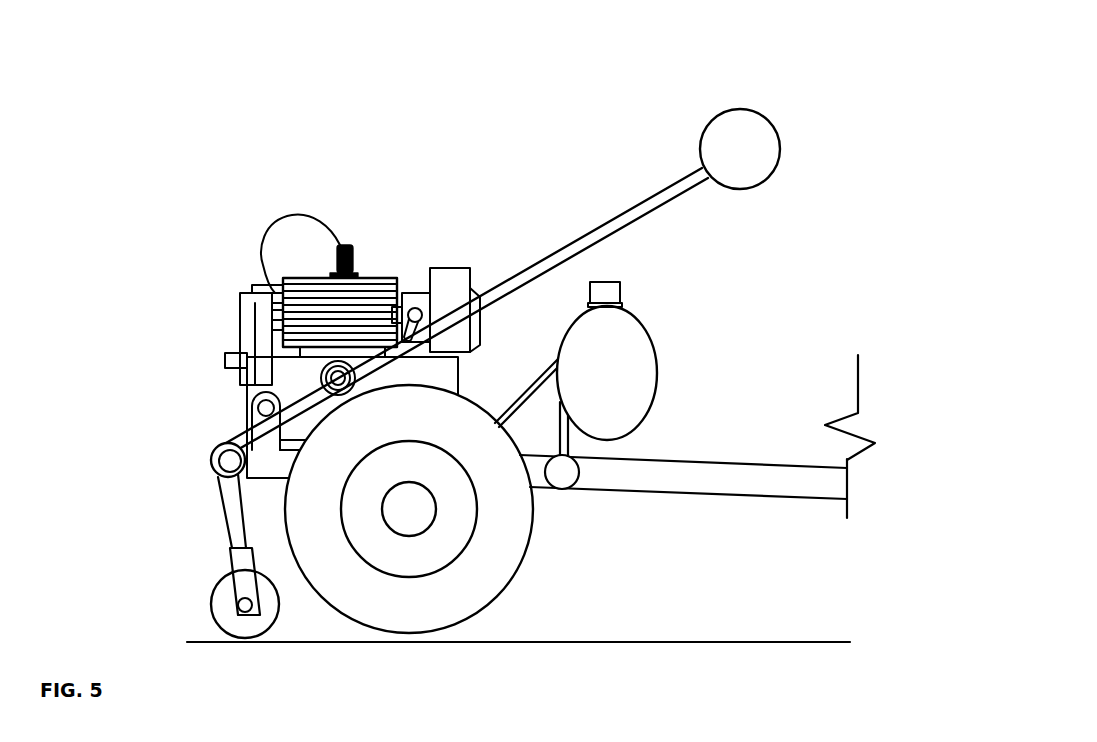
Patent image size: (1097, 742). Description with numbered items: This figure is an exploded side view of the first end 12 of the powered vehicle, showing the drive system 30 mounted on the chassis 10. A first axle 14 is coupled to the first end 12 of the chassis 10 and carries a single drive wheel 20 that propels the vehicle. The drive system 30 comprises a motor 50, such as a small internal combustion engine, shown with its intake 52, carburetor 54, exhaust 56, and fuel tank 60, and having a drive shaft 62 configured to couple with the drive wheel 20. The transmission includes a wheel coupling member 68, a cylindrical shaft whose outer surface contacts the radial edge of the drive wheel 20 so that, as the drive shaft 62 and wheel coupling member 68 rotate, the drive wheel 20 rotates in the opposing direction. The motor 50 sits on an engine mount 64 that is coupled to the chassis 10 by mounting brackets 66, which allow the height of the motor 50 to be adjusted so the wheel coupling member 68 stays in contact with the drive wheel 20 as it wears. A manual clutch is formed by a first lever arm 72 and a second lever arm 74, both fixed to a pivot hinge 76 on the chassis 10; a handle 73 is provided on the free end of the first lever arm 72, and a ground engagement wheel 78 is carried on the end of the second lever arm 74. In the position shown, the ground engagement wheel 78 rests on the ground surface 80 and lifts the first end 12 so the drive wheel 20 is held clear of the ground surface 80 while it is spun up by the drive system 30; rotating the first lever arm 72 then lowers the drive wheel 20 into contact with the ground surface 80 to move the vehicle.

The chassis 10 is at (535, 452).
The first end 12 is at (497, 130).
The first axle 14 is at (412, 517).
The drive wheel 20 is at (530, 527).
The drive system 30 is at (392, 213).
The motor 50 is at (313, 292).
The intake 52 is at (453, 275).
The carburetor 54 is at (410, 303).
The exhaust 56 is at (240, 305).
The fuel tank 60 is at (623, 340).
The drive shaft 62 is at (320, 367).
The engine mount 64 is at (263, 385).
The mounting brackets 66 is at (250, 417).
The wheel coupling member 68 is at (318, 382).
The first lever arm 72 is at (575, 240).
The handle 73 is at (753, 142).
The second lever arm 74 is at (227, 535).
The pivot hinge 76 is at (211, 470).
The ground engagement wheel 78 is at (220, 605).
The ground surface 80 is at (684, 641).